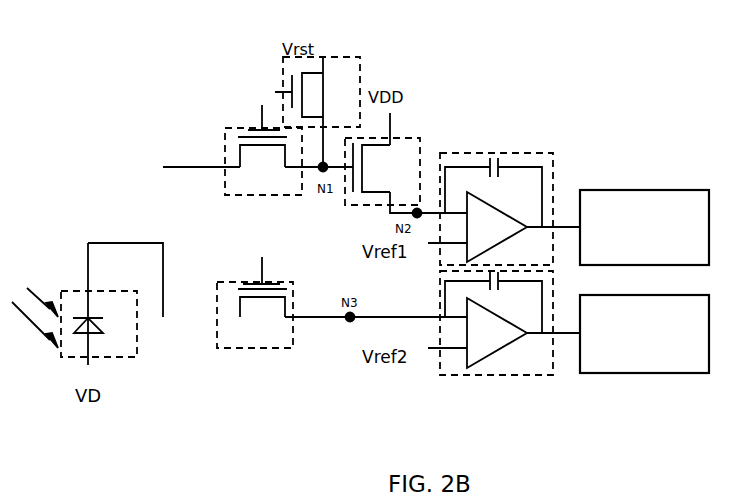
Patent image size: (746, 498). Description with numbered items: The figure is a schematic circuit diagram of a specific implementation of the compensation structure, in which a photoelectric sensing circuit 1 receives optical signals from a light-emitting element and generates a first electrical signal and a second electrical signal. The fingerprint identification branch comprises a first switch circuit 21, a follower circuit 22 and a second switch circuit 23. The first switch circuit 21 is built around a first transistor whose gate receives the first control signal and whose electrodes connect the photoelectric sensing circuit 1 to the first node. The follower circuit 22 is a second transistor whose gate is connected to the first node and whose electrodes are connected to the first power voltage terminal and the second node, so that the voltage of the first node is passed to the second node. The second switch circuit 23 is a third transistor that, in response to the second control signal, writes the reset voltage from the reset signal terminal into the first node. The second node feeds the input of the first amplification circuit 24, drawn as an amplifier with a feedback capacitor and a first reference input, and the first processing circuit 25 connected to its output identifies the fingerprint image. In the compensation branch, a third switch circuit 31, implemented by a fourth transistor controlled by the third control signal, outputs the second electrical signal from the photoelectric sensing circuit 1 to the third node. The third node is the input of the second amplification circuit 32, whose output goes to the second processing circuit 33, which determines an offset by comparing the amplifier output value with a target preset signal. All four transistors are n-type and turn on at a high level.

The photoelectric sensing circuit 1 is at (68, 287).
The first switch circuit 21 is at (300, 193).
The follower circuit 22 is at (420, 135).
The second switch circuit 23 is at (357, 53).
The first amplification circuit 24 is at (542, 153).
The first processing circuit 25 is at (644, 227).
The third switch circuit 31 is at (240, 348).
The second amplification circuit 32 is at (537, 375).
The second processing circuit 33 is at (644, 334).